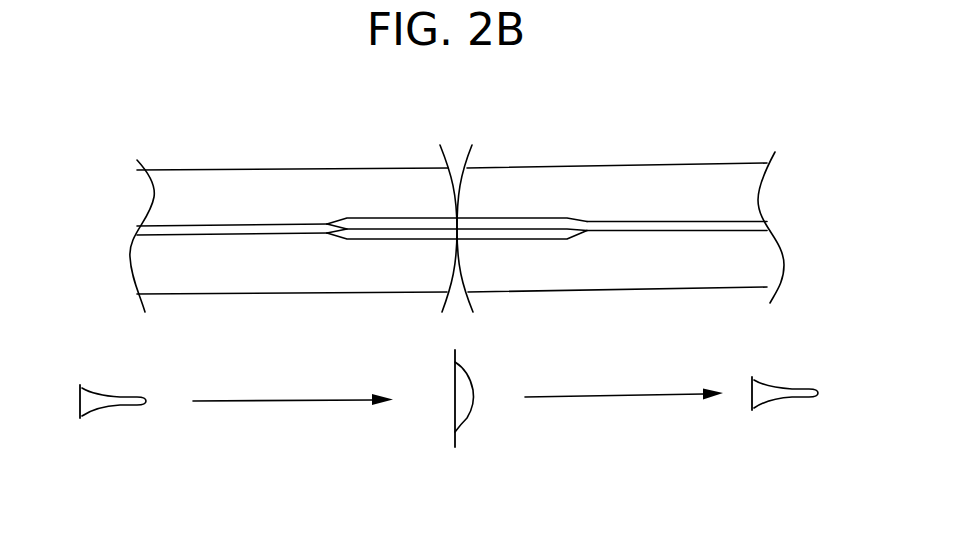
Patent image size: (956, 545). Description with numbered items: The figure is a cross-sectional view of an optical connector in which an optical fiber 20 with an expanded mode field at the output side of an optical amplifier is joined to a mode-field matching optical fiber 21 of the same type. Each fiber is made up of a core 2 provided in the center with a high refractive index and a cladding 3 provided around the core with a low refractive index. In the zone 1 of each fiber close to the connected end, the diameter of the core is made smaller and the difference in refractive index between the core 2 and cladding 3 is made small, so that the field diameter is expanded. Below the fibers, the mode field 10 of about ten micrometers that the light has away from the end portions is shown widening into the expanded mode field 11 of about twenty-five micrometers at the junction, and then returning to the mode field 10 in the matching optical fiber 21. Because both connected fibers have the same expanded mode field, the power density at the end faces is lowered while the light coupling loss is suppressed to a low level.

The zone 1 is at (382, 228).
The core 2 is at (190, 228).
The cladding 3 is at (263, 178).
The optical fiber 20 is at (278, 288).
The mode-field matching optical fiber 21 is at (575, 283).
The mode field 10 is at (112, 418).
The mode field 11 is at (467, 418).